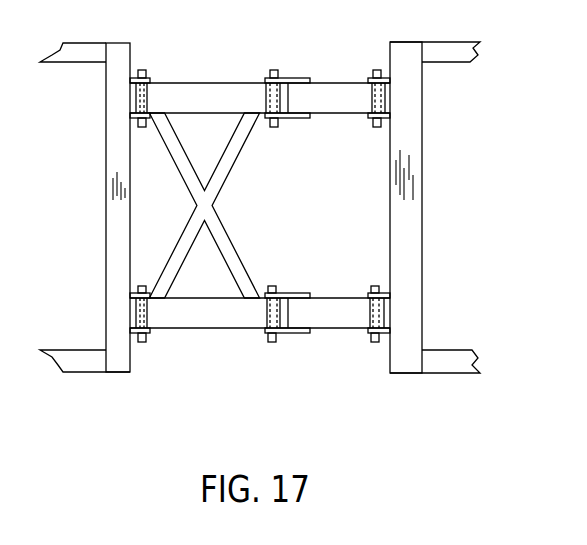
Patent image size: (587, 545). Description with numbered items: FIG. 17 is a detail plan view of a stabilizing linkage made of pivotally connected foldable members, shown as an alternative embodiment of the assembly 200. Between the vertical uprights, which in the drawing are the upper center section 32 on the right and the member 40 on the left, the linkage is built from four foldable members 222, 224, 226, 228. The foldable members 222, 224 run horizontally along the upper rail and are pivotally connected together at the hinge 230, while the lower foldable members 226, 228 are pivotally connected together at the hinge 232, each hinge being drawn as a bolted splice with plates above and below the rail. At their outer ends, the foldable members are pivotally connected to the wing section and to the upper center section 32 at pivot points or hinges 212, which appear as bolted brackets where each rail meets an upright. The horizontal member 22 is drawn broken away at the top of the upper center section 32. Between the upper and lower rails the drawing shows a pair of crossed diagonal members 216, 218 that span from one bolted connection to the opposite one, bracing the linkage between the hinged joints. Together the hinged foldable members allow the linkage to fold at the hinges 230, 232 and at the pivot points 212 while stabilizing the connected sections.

The bracing panel assembly 200 is at (176, 60).
The horizontal frame member 22 is at (460, 55).
The upper center section 32 is at (440, 57).
The vertical column 40 is at (105, 318).
The pivot points or hinges 212 is at (145, 130).
The diagonal brace 216 is at (230, 233).
The diagonal brace 218 is at (235, 167).
The foldable member 222 is at (200, 83).
The foldable member 224 is at (330, 83).
The foldable member 226 is at (260, 204).
The foldable member 228 is at (330, 330).
The hinge 230 is at (272, 128).
The hinge 232 is at (270, 288).